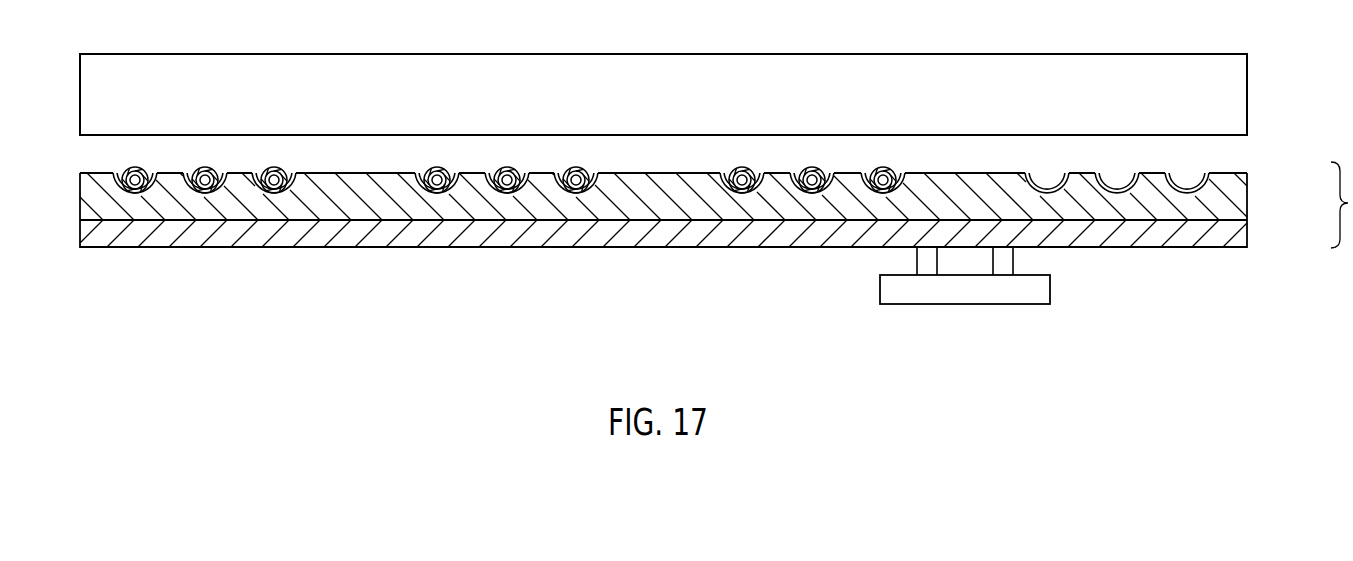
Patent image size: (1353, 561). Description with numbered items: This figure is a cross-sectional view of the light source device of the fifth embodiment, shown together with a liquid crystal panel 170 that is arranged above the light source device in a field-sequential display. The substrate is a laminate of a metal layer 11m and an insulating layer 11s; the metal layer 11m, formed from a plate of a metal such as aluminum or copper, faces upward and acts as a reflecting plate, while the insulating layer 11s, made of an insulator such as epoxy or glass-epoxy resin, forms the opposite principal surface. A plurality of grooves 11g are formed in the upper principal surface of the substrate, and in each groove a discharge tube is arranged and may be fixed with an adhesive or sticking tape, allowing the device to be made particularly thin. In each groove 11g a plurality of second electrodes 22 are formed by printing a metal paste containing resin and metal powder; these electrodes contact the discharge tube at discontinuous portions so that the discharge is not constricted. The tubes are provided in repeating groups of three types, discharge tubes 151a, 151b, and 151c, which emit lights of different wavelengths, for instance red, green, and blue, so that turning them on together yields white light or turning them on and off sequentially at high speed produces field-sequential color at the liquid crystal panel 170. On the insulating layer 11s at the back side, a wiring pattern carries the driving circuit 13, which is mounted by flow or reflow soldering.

The liquid crystal panel 170 is at (1232, 91).
The grooves 11g is at (1189, 178).
The metal layer 11m is at (1229, 192).
The insulating layer 11s is at (1230, 243).
The discharge tube 151a is at (137, 192).
The discharge tube 151b is at (207, 192).
The discharge tube 151c is at (275, 192).
The second electrodes 22 is at (1197, 194).
The driving circuit 13 is at (961, 299).